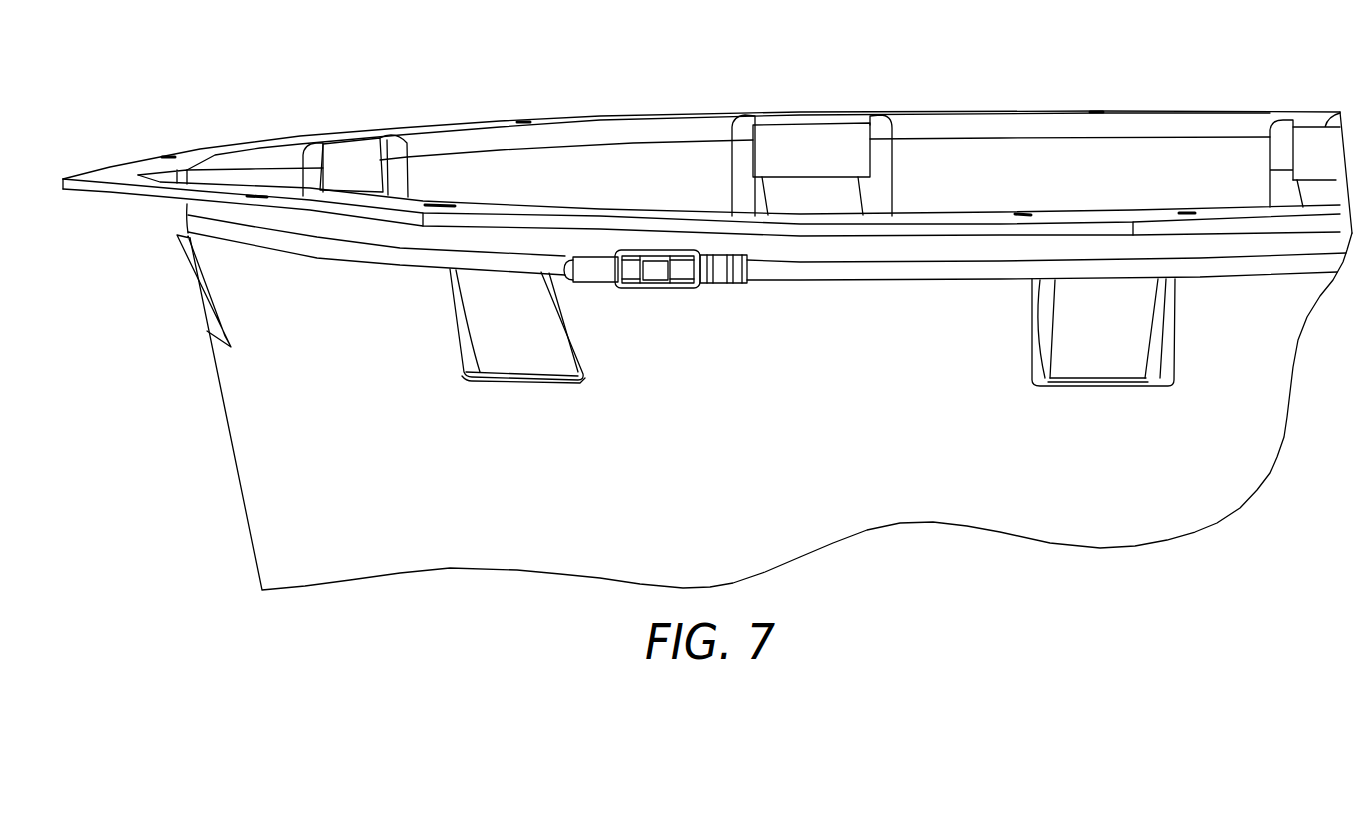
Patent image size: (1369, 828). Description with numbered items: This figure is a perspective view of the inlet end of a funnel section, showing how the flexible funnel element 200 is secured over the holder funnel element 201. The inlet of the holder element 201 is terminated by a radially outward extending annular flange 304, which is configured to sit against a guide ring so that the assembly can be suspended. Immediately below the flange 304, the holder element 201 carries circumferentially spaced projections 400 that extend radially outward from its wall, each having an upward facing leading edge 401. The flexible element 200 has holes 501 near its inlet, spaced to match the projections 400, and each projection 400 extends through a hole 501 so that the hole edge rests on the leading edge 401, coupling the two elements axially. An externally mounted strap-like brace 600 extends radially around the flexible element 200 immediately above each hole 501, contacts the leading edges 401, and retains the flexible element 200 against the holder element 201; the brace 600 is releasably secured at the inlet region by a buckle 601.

The flexible funnel element 200 is at (670, 481).
The holder funnel element 201 is at (640, 165).
The annular flange 304 is at (233, 144).
The projection 400 is at (512, 345).
The leading edge 401 is at (500, 271).
The hole 501 is at (1033, 378).
The brace 600 is at (907, 279).
The buckle 601 is at (681, 291).